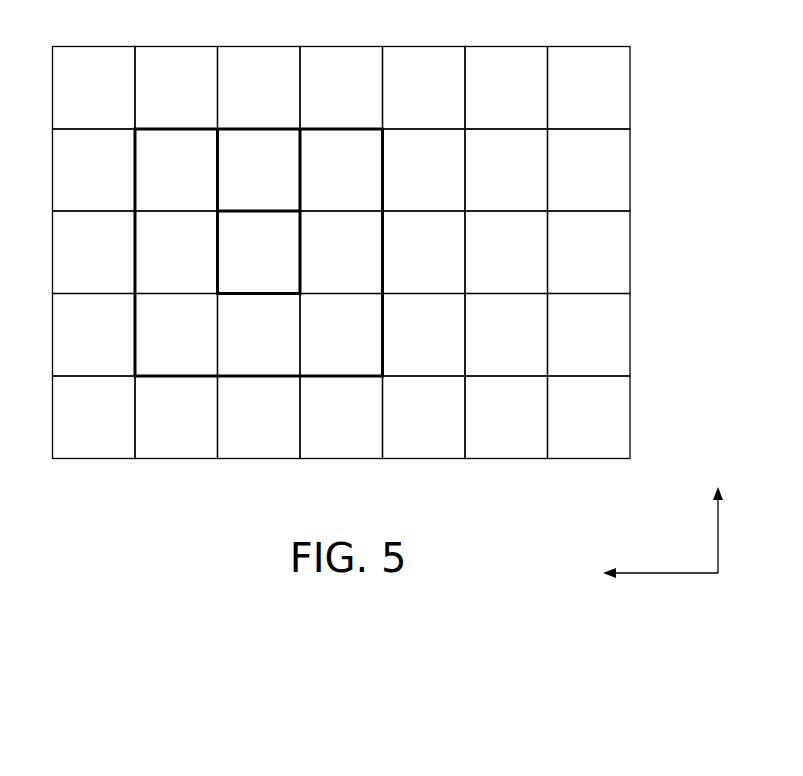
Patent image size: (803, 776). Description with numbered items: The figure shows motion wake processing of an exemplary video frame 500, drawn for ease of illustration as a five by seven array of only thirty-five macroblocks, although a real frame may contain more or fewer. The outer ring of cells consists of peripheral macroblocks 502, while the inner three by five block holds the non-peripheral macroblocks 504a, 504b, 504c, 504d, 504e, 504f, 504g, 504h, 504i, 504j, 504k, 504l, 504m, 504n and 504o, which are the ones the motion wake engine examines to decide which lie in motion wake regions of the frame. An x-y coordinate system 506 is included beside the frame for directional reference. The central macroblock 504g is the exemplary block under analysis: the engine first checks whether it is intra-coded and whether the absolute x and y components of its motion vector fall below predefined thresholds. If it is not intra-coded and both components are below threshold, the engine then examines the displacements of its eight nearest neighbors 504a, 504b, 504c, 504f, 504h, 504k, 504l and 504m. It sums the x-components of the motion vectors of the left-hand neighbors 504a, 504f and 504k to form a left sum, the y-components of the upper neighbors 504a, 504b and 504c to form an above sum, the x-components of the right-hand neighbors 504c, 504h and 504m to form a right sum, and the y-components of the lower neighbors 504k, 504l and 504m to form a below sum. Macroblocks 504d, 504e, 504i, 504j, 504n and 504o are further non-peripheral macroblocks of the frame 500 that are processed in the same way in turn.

The video frame 500 is at (85, 517).
The peripheral macroblocks 502 is at (342, 253).
The nearest neighbor macroblock 504a is at (176, 170).
The nearest neighbor macroblock 504b is at (259, 170).
The nearest neighbor macroblock 504c is at (341, 170).
The non-peripheral macroblock 504d is at (424, 170).
The non-peripheral macroblock 504e is at (506, 170).
The nearest neighbor macroblock 504f is at (176, 252).
The macroblock 504g is at (259, 252).
The nearest neighbor macroblock 504h is at (341, 252).
The non-peripheral macroblock 504i is at (424, 252).
The non-peripheral macroblock 504j is at (506, 252).
The nearest neighbor macroblock 504k is at (176, 335).
The nearest neighbor macroblock 504l is at (259, 335).
The nearest neighbor macroblock 504m is at (341, 335).
The non-peripheral macroblock 504n is at (424, 335).
The non-peripheral macroblock 504o is at (506, 335).
The x-y coordinate system 506 is at (718, 573).